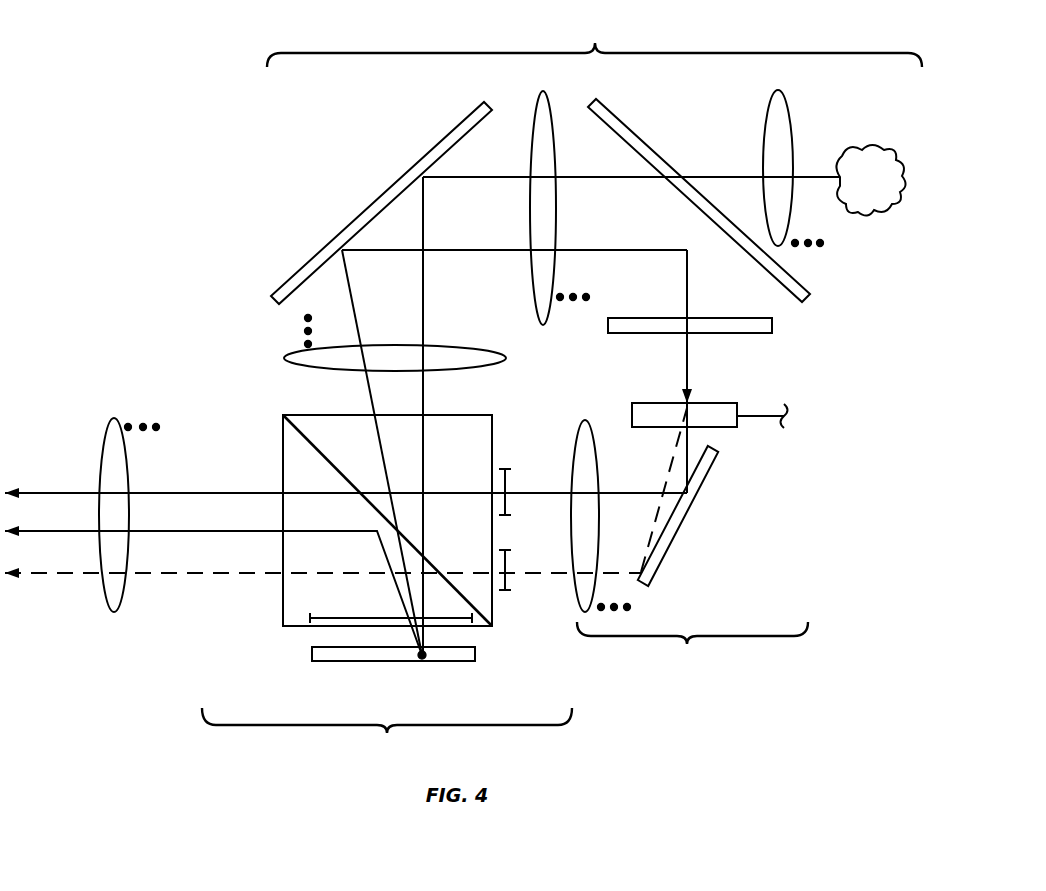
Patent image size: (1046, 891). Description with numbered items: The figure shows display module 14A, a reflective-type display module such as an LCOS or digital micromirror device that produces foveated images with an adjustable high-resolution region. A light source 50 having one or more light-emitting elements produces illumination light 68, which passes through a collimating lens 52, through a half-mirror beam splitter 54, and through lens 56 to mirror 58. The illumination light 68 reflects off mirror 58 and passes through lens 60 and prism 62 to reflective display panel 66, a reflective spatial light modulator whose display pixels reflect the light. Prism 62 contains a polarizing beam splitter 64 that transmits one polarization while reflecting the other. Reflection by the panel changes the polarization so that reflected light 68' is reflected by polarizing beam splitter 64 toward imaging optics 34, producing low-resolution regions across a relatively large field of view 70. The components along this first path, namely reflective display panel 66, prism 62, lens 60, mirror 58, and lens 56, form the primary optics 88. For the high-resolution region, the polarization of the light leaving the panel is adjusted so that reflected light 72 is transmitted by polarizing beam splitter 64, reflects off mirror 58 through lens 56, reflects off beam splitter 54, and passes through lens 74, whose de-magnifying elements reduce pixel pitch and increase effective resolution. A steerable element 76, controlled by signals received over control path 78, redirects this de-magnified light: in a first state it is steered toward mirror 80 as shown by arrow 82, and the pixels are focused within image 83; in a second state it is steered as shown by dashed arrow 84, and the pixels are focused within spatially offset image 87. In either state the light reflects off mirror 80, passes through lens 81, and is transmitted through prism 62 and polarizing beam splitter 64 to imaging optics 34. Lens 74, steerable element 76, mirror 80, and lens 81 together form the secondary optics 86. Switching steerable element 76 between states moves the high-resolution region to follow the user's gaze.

The display module 14A is at (594, 35).
The imaging optics 34 is at (111, 370).
The light source 50 is at (858, 145).
The lens 52 is at (766, 112).
The beam splitter 54 is at (620, 115).
The lens 56 is at (535, 104).
The mirror 58 is at (436, 145).
The lens 60 is at (478, 344).
The prism 62 is at (282, 596).
The polarizing beam splitter 64 is at (310, 441).
The reflective display panel 66 is at (357, 662).
The illumination light 68 is at (631, 389).
The reflected light 68' is at (213, 593).
The field of view 70 is at (308, 619).
The reflected light 72 is at (355, 303).
The lens 74 is at (772, 325).
The steerable element 76 is at (725, 403).
The control path 78 is at (763, 425).
The mirror 80 is at (700, 500).
The lens 81 is at (582, 425).
The arrow 82 is at (52, 491).
The image 83 is at (505, 467).
The dashed arrow 84 is at (50, 576).
The secondary optics 86 is at (692, 644).
The image 87 is at (505, 592).
The primary optics 88 is at (387, 734).